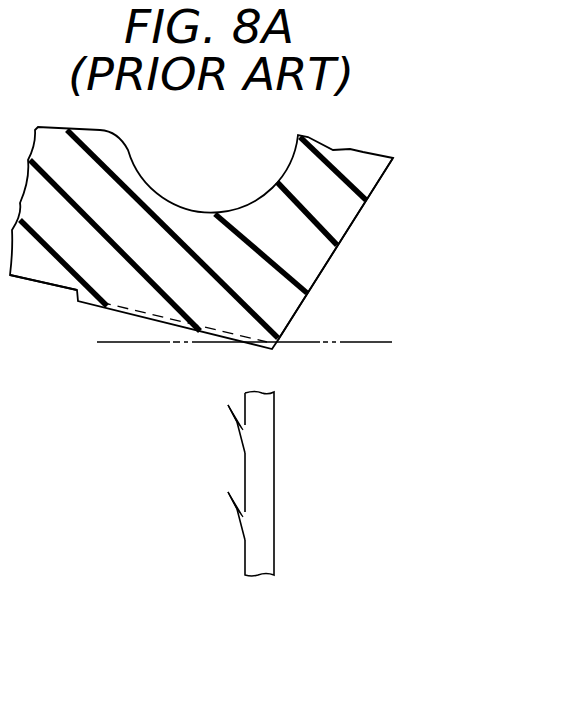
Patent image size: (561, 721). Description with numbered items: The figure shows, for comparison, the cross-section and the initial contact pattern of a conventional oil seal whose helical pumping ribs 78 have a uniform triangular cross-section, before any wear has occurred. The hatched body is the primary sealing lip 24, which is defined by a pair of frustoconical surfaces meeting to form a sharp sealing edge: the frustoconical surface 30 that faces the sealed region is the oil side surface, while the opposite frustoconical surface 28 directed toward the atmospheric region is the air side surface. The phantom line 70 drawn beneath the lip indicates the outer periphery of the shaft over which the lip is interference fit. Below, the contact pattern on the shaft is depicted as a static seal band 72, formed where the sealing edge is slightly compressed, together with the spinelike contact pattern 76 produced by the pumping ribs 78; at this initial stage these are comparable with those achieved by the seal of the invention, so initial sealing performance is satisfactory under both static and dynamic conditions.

The primary sealing lip 24 is at (198, 232).
The air side frustoconical surface 28 is at (48, 288).
The oil side frustoconical surface 30 is at (328, 262).
The phantom line 70 is at (375, 342).
The static seal band 72 is at (263, 487).
The spinelike contact pattern 76 is at (237, 422).
The helical pumping ribs 78 is at (147, 320).